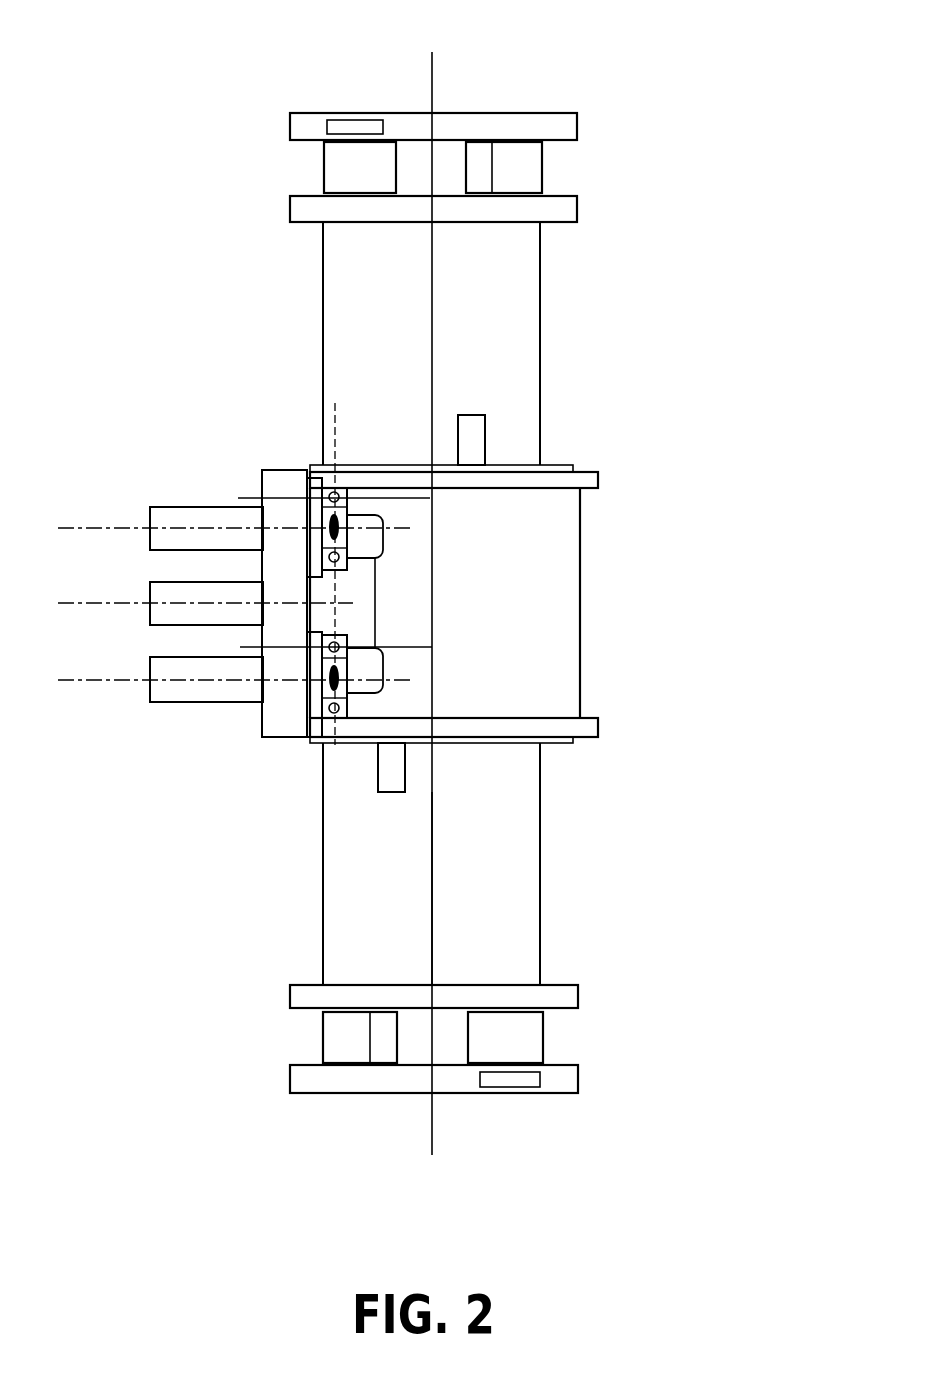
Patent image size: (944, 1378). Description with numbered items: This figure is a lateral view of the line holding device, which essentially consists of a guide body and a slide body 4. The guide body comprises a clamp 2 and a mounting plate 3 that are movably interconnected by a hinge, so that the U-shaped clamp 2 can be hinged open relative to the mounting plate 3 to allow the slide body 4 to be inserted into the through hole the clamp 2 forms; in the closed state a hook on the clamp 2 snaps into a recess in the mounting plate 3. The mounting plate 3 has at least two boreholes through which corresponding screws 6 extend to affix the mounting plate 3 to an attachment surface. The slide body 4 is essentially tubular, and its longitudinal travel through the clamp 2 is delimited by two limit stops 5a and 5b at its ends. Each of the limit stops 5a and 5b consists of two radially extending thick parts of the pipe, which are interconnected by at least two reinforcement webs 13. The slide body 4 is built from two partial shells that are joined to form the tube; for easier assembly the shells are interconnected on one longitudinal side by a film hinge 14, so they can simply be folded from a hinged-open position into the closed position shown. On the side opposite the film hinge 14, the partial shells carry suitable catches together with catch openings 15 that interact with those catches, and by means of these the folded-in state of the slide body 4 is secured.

The clamp 2 is at (481, 604).
The mounting plate 3 is at (312, 553).
The slide body 4 is at (384, 602).
The limit stop 5a is at (373, 151).
The limit stop 5b is at (375, 1022).
The screws 6 is at (235, 555).
The reinforcement webs 13 is at (443, 606).
The film hinge 14 is at (335, 864).
The catch openings 15 is at (539, 410).